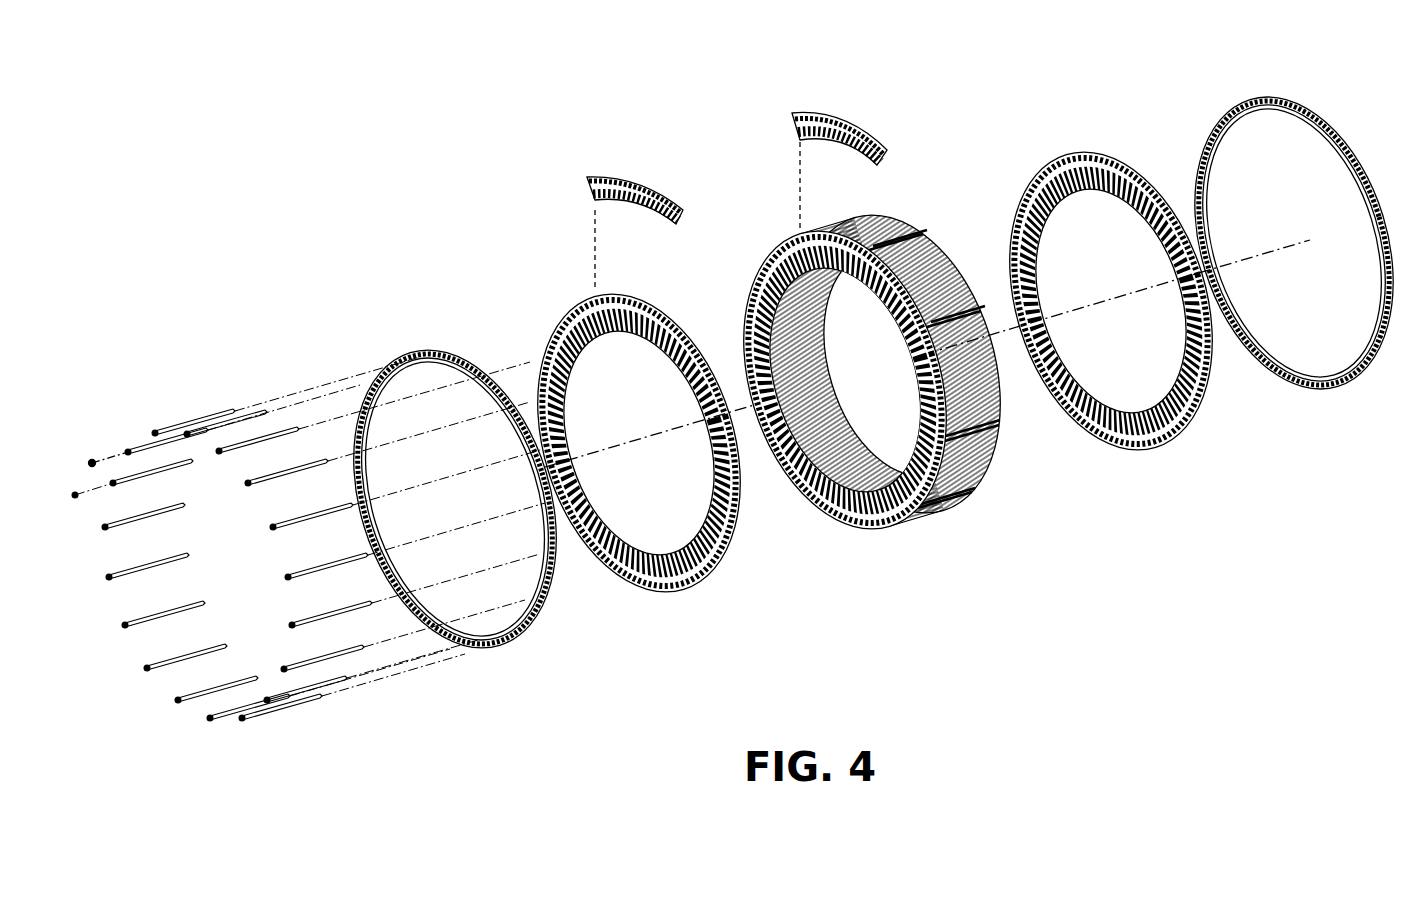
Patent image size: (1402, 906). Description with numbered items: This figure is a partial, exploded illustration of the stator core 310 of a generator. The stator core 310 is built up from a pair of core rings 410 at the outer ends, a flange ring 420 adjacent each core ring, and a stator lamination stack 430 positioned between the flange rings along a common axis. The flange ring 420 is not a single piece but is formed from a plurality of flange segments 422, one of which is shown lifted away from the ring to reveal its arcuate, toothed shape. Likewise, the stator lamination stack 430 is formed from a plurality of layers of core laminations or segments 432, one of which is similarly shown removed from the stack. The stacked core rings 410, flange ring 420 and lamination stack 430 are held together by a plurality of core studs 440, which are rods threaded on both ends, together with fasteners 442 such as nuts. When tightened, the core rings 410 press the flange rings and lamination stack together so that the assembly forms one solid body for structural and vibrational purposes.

The stator core 310 is at (388, 216).
The core rings 410 is at (455, 352).
The flange ring 420 is at (704, 572).
The flange segments 422 is at (590, 190).
The stator lamination stack 430 is at (940, 505).
The core laminations or segments 432 is at (796, 128).
The core studs 440 is at (140, 447).
The fasteners 442 is at (92, 460).